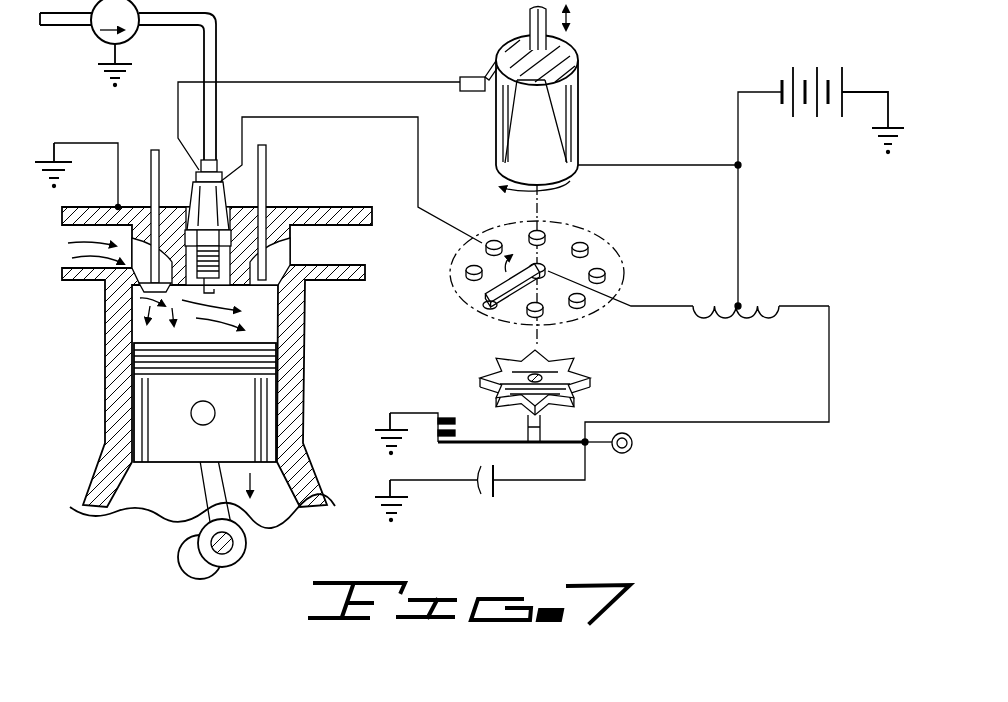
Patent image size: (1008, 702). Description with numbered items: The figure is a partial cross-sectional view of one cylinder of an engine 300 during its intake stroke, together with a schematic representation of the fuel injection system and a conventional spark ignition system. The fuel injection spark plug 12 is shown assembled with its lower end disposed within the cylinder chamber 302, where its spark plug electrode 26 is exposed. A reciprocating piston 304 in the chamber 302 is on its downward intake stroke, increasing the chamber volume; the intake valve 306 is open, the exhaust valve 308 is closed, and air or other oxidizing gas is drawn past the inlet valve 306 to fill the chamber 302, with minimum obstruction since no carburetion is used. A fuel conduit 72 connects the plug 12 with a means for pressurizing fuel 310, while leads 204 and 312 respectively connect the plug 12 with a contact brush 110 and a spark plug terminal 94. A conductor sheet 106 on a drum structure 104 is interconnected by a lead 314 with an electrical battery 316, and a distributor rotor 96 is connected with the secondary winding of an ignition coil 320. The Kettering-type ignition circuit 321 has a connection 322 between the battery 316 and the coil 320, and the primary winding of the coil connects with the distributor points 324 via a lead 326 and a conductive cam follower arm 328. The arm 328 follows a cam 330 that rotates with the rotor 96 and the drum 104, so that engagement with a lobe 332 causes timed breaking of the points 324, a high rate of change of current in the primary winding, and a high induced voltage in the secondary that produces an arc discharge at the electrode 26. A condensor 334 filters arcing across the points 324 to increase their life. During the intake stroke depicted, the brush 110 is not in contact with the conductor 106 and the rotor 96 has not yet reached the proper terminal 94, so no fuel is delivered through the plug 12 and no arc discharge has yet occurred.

The fuel injection spark plug 12 is at (188, 178).
The spark plug electrode 26 is at (216, 292).
The fuel conduit 72 is at (218, 48).
The spark plug terminal 94 is at (484, 252).
The distributor rotor 96 is at (486, 300).
The drum structure 104 is at (579, 93).
The conductor sheet 106 is at (543, 143).
The contact brush 110 is at (480, 75).
The lead 204 is at (330, 80).
The engine 300 is at (358, 208).
The cylinder chamber 302 is at (268, 326).
The reciprocating piston 304 is at (193, 450).
The intake valve 306 is at (133, 300).
The exhaust valve 308 is at (304, 298).
The means for pressurizing fuel 310 is at (93, 38).
The lead 312 is at (328, 116).
The lead 314 is at (676, 164).
The electrical battery 316 is at (842, 78).
The ignition coil 320 is at (733, 320).
The ignition circuit 321 is at (627, 252).
The connection 322 is at (740, 224).
The distributor points 324 is at (466, 424).
The lead 326 is at (722, 421).
The conductive cam follower arm 328 is at (570, 445).
The cam 330 is at (553, 370).
The lobe 332 is at (572, 408).
The condensor 334 is at (496, 488).